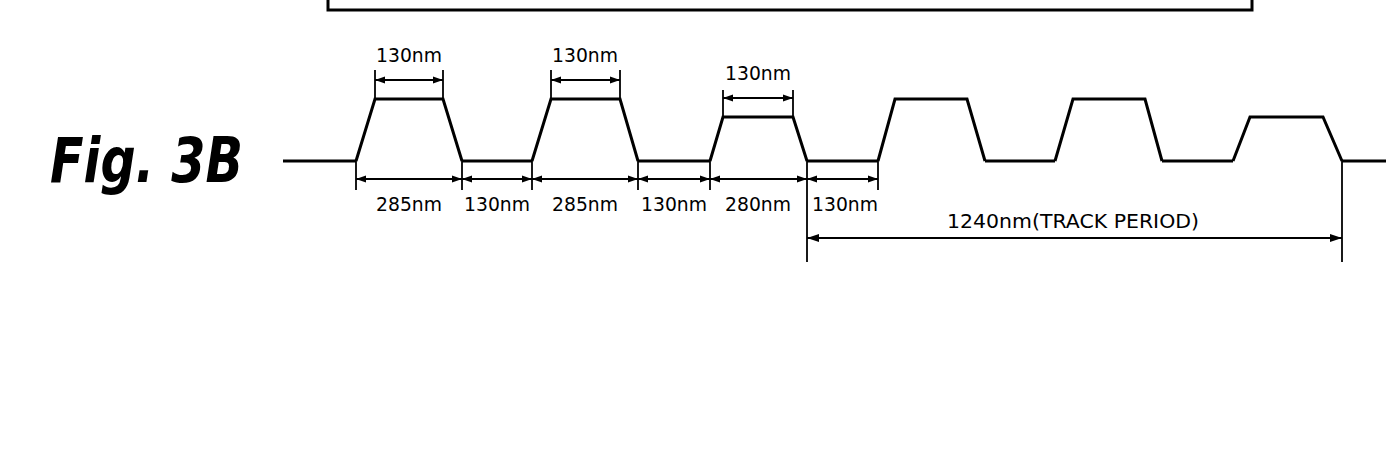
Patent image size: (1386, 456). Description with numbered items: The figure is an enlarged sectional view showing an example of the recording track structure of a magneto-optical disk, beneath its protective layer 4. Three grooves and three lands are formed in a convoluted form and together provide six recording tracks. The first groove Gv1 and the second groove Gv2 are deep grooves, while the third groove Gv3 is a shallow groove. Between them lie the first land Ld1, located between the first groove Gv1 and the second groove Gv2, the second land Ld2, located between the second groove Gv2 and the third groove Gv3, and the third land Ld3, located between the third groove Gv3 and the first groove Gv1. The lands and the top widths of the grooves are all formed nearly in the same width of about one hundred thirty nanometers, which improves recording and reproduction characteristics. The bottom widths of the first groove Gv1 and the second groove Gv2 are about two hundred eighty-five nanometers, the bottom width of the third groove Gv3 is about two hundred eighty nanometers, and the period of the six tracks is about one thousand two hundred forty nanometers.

The protective layer 4 is at (1190, 10).
The first groove Gv1 is at (438, 99).
The second groove Gv2 is at (613, 99).
The third groove Gv3 is at (786, 117).
The first land Ld1 is at (467, 162).
The second land Ld2 is at (642, 162).
The third land Ld3 is at (322, 162).